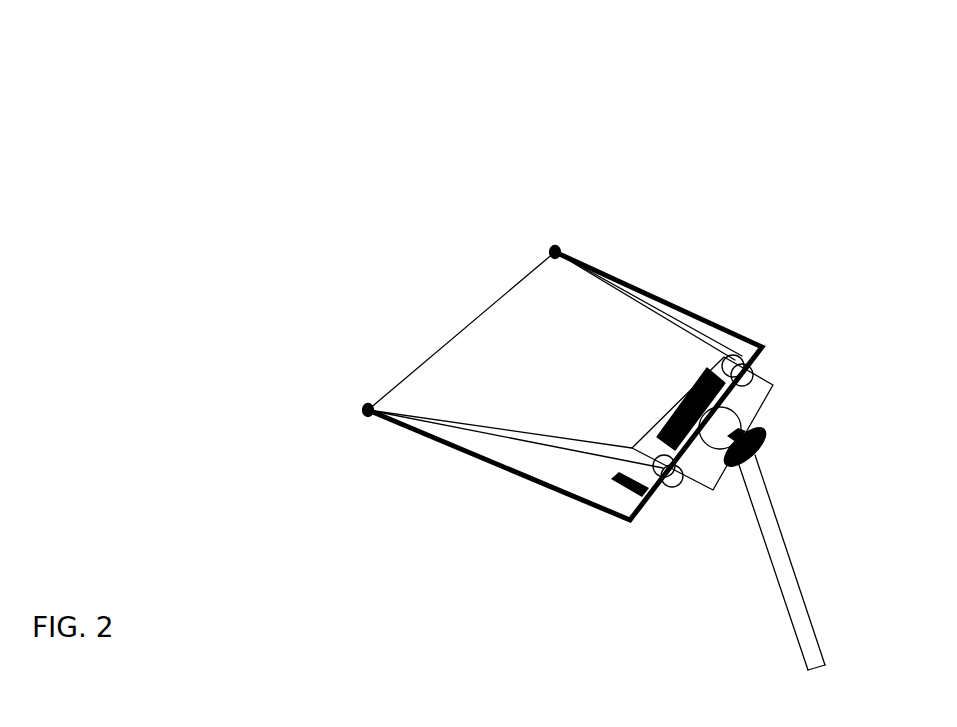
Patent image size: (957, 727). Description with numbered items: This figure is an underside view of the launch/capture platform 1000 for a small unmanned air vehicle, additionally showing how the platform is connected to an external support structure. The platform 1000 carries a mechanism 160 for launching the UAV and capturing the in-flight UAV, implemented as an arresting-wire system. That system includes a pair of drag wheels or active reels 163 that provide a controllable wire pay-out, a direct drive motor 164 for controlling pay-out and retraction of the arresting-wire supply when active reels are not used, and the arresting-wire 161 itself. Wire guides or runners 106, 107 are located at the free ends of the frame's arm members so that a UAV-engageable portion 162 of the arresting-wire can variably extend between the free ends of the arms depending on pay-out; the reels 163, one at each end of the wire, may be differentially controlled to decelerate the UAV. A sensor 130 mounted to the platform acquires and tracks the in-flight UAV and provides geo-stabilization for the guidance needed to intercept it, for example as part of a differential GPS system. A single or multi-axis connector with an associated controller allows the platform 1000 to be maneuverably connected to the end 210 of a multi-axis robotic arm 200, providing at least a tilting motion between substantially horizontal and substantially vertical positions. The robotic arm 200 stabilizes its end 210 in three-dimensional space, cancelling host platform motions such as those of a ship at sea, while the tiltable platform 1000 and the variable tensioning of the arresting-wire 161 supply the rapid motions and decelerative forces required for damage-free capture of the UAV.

The launch/capture platform 1000 is at (780, 113).
The wire guide or runner 106 is at (343, 423).
The wire guide or runner 107 is at (573, 235).
The sensor 130 is at (617, 493).
The mechanism for launching and capturing the UAV 160 is at (520, 395).
The arresting-wire 161 is at (688, 335).
The UAV-engageable portion of the arresting-wire 162 is at (416, 350).
The drag wheels or active reels 163 is at (722, 365).
The direct drive motor 164 is at (678, 397).
The multi-axis robotic arm 200 is at (813, 592).
The end of the robotic arm 210 is at (758, 440).